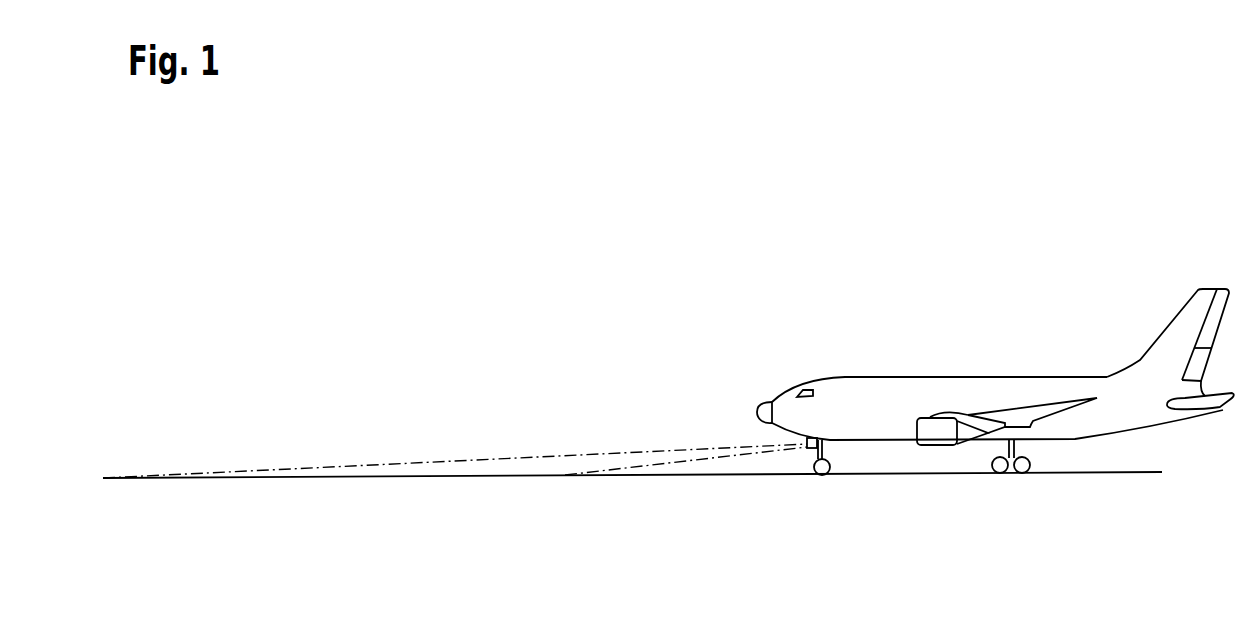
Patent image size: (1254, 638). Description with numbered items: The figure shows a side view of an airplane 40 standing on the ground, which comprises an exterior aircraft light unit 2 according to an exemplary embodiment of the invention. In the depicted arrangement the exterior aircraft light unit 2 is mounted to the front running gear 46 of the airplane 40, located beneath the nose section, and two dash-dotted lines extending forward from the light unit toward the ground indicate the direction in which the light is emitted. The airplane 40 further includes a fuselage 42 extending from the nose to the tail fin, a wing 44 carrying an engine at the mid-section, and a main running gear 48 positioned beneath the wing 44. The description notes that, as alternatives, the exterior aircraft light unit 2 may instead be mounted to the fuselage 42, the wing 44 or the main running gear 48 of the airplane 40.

The exterior aircraft light unit 2 is at (814, 437).
The airplane 40 is at (995, 407).
The fuselage 42 is at (922, 385).
The wing 44 is at (1052, 408).
The front running gear 46 is at (845, 477).
The main running gear 48 is at (981, 475).